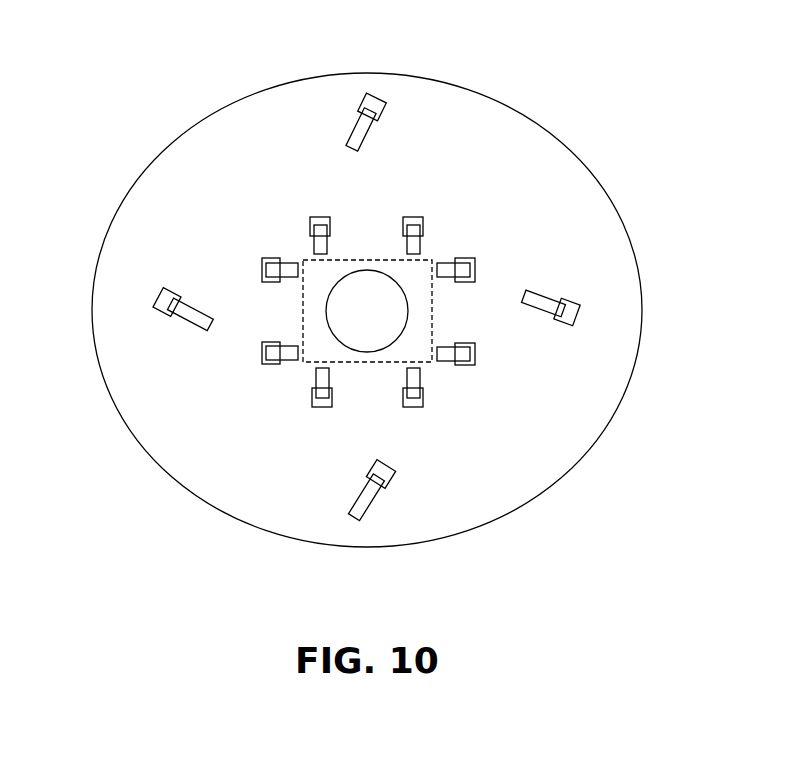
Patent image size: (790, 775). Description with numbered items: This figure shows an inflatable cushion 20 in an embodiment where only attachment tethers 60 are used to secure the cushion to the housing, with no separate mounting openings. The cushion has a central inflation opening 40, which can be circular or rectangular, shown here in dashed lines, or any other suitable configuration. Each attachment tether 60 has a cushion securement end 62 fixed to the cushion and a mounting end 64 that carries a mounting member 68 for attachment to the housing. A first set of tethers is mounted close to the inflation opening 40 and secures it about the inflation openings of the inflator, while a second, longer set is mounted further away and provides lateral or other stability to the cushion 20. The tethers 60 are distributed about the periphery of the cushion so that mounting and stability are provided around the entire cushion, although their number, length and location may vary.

The inflatable cushion 20 is at (583, 200).
The inflation opening 40 is at (368, 279).
The attachment tether 60 is at (352, 120).
The cushion securement end 62 is at (350, 152).
The mounting end 64 is at (376, 97).
The mounting member 68 is at (388, 106).